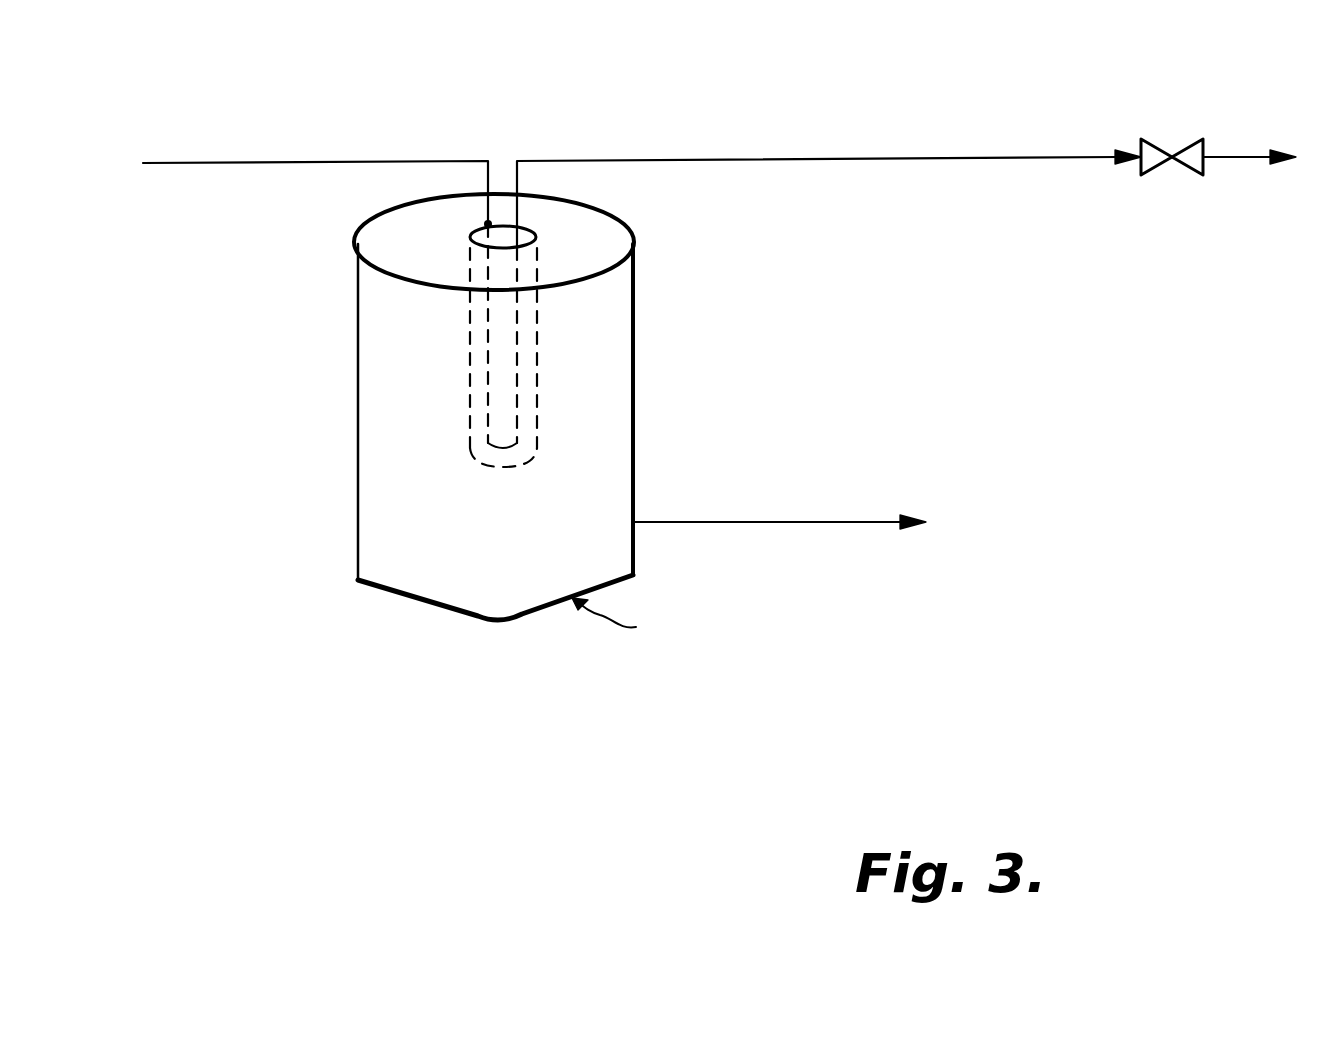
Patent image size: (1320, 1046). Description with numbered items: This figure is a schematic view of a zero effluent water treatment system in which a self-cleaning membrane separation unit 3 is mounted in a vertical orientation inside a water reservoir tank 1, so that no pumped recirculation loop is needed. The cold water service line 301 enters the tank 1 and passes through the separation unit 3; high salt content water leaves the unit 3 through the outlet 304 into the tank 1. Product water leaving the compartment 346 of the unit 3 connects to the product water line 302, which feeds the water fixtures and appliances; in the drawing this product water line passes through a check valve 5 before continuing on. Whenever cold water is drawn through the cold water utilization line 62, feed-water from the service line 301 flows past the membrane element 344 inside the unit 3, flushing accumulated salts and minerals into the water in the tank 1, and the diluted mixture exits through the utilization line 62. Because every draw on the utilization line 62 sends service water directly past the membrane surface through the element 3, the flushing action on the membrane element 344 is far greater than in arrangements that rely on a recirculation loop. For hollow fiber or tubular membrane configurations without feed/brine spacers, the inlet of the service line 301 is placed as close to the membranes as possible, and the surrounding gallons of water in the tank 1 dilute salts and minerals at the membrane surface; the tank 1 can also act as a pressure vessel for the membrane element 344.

The tank 1 is at (433, 612).
The separation unit 3 is at (555, 397).
The check valve 5 is at (1185, 142).
The cold water utilization line (CWUL) 62 is at (806, 522).
The cold water service line (CWSL) 301 is at (310, 163).
The product water line 302 is at (629, 160).
The outlet 304 is at (477, 458).
The membrane element 344 is at (492, 341).
The compartment 346 is at (520, 260).